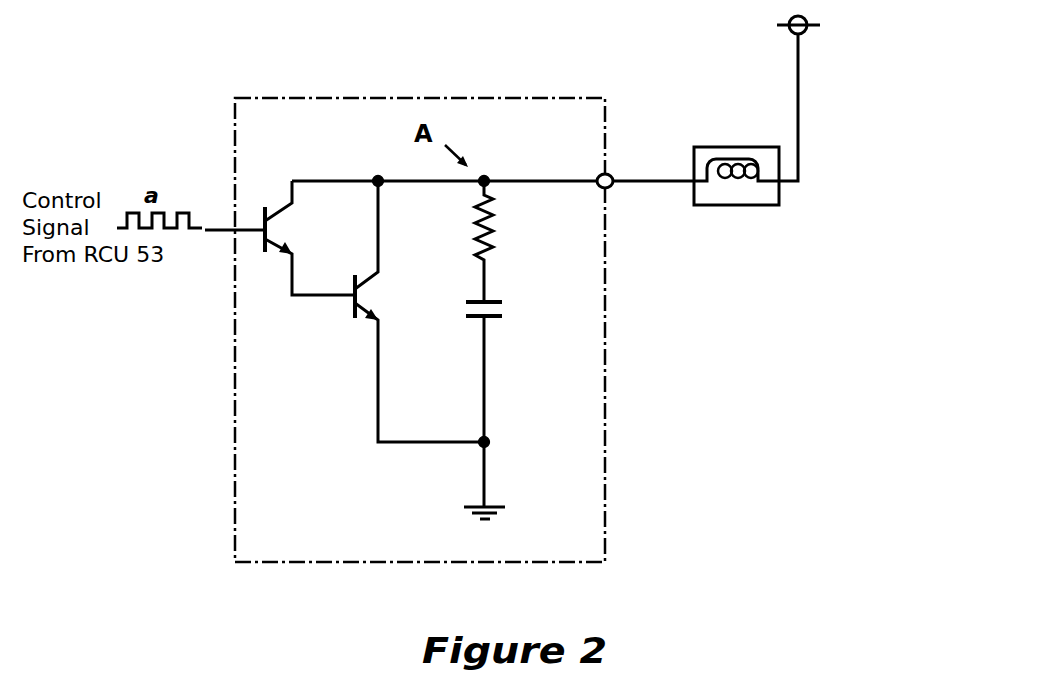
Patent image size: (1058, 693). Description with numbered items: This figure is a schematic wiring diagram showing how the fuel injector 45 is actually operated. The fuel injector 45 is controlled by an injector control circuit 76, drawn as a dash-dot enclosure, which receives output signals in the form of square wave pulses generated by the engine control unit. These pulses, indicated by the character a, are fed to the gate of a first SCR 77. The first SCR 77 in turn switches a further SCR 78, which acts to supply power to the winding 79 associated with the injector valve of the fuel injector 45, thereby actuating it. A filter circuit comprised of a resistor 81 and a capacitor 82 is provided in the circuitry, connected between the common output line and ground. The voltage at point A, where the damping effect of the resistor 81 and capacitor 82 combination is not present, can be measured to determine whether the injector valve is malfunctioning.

The injector control circuit 76 is at (550, 98).
The first SCR 77 is at (290, 225).
The further SCR 78 is at (383, 292).
The resistor 81 is at (492, 240).
The capacitor 82 is at (500, 305).
The winding 79 is at (713, 157).
The fuel injector 45 is at (736, 175).